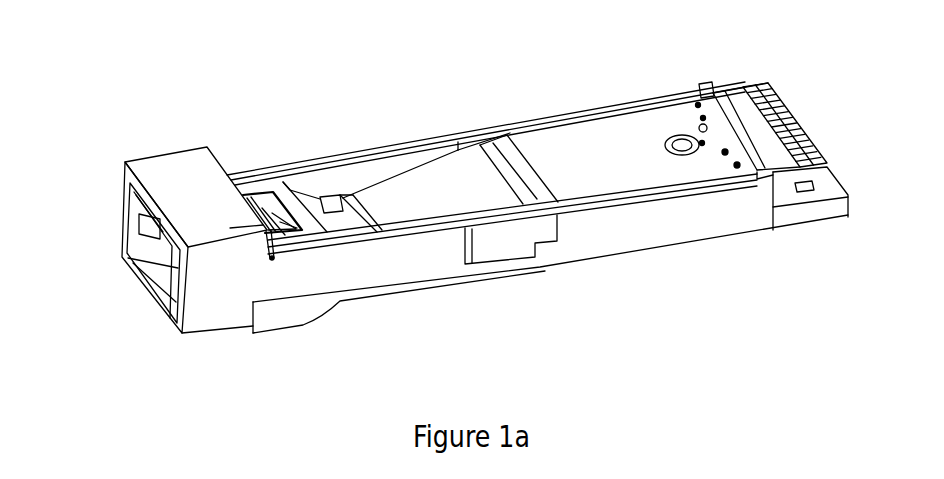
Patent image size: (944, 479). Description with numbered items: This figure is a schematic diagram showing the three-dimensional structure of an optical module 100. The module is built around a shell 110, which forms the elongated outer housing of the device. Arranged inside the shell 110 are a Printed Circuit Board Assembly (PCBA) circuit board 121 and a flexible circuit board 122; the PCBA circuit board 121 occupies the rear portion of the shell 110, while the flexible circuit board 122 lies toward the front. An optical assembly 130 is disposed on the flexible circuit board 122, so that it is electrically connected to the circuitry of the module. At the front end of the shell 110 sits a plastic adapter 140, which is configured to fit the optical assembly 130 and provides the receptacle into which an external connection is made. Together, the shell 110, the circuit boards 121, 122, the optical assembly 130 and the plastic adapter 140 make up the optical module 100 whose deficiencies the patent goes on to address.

The optical module 100 is at (475, 54).
The shell 110 is at (632, 238).
The Printed Circuit Board Assembly (PCBA) circuit board 121 is at (612, 138).
The flexible circuit board 122 is at (425, 195).
The optical assembly 130 is at (322, 211).
The plastic adapter 140 is at (157, 249).